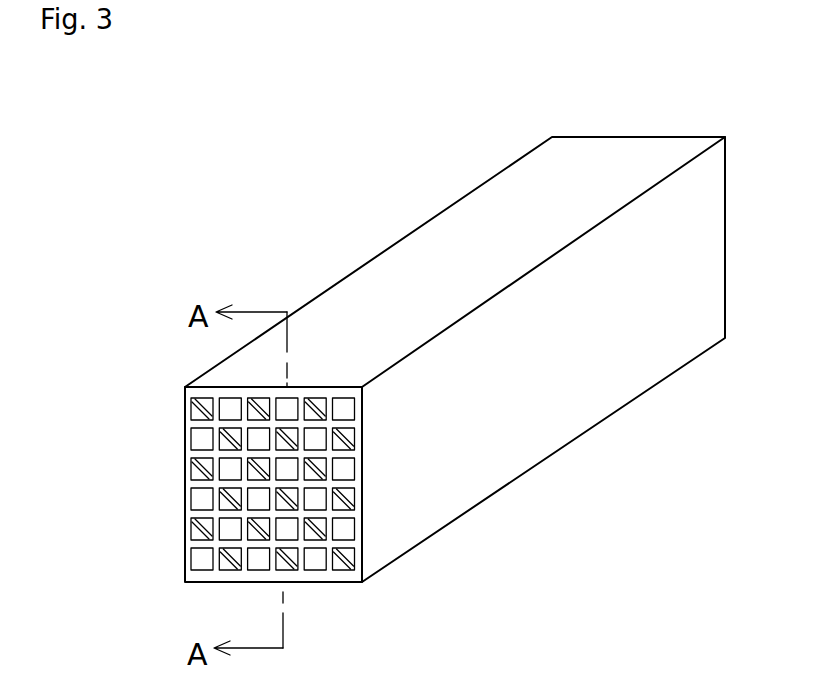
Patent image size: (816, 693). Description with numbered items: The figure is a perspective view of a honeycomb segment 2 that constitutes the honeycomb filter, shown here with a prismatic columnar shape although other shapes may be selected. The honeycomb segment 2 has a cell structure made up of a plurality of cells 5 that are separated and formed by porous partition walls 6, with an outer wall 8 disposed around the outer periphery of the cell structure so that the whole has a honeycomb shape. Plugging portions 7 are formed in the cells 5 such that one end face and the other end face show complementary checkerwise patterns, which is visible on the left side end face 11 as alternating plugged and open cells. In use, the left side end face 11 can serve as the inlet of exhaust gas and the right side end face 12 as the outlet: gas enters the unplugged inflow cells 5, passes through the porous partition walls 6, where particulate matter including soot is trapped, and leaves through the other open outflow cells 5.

The honeycomb segment 2 is at (301, 250).
The cells 5 is at (197, 443).
The porous partition walls 6 is at (313, 543).
The plugging portions 7 is at (190, 408).
The outer wall 8 is at (184, 390).
The left side end face 11 is at (317, 387).
The right side end face 12 is at (592, 137).